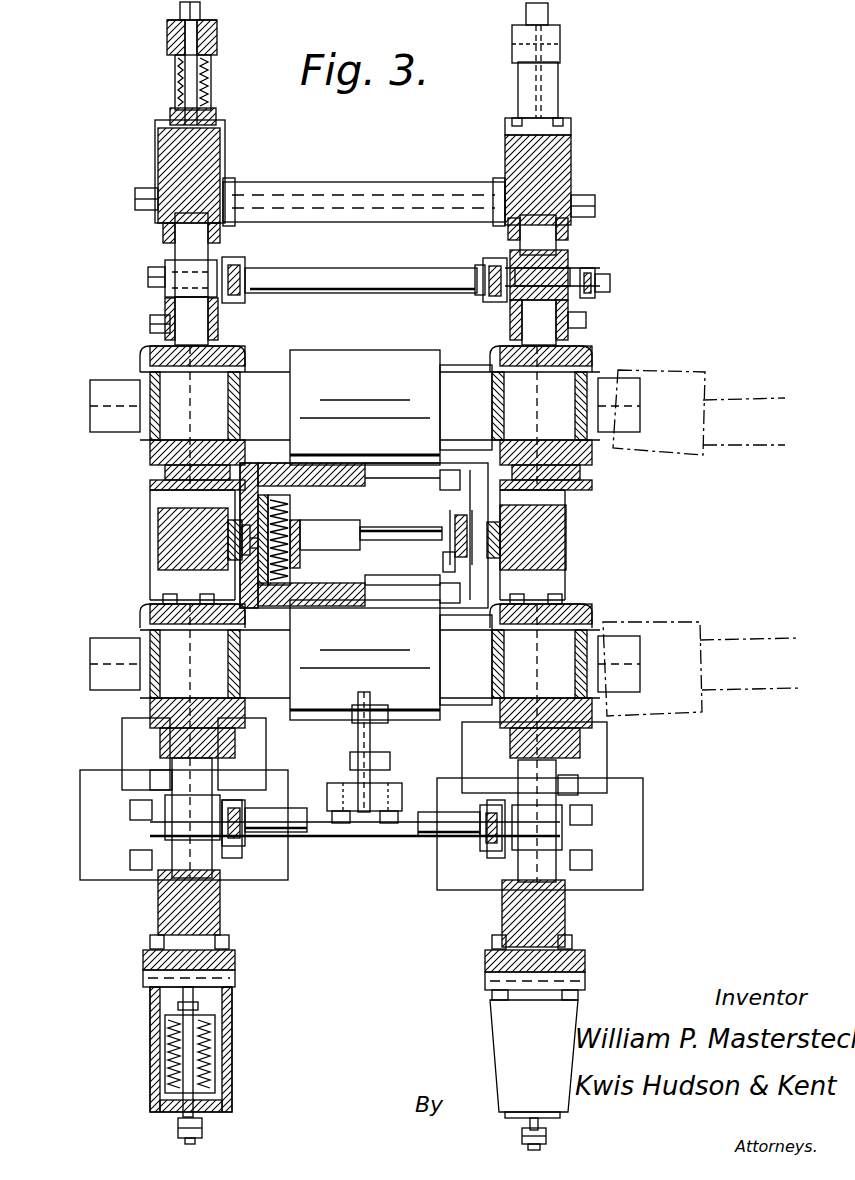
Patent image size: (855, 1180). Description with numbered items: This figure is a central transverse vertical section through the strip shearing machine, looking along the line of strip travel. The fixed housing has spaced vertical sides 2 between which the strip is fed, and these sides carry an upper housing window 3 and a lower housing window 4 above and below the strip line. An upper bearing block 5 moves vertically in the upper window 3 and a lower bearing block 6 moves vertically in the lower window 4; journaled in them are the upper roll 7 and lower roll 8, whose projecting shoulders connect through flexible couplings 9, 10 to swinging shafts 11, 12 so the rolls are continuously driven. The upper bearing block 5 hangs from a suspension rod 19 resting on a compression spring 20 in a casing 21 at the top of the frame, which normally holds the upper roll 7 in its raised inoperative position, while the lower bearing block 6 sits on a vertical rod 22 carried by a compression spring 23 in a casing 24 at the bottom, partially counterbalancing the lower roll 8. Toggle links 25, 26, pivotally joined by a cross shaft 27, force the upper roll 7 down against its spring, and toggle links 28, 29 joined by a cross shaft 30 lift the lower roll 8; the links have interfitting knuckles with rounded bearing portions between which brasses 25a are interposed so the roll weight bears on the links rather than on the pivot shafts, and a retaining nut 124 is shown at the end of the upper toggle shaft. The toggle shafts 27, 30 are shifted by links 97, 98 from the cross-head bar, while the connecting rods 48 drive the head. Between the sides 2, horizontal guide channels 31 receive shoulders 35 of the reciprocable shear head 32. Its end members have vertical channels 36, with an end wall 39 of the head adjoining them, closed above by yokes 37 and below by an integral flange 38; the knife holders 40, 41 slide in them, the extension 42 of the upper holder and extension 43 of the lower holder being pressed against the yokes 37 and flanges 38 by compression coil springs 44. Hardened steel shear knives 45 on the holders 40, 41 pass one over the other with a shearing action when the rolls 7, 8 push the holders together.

The vertical sides 2 is at (160, 155).
The upper housing window 3 is at (165, 322).
The lower housing window 4 is at (168, 585).
The upper bearing block 5 is at (225, 350).
The lower bearing block 6 is at (142, 708).
The upper roll 7 is at (420, 352).
The lower roll 8 is at (418, 718).
The flexible coupling 9 is at (680, 382).
The flexible coupling 10 is at (660, 628).
The swinging shaft 11 is at (768, 438).
The swinging shaft 12 is at (742, 642).
The suspension rod 19 is at (195, 103).
The compression spring 20 is at (205, 74).
The casing 21 is at (176, 86).
The vertical rod 22 is at (200, 1115).
The compression spring 23 is at (200, 1072).
The casing 24 is at (232, 1020).
The toggle link 25 is at (170, 254).
The brass 25a is at (582, 266).
The toggle link 26 is at (172, 302).
The cross shaft 27 is at (430, 278).
The toggle link 28 is at (200, 792).
The toggle link 29 is at (182, 872).
The cross shaft 30 is at (290, 812).
The horizontal guide channel 31 is at (172, 540).
The shear head 32 is at (395, 605).
The shoulder 35 is at (190, 570).
The vertical channel 36 is at (245, 535).
The yoke 37 is at (290, 486).
The integral flange 38 is at (296, 590).
The housing end wall 39 is at (240, 496).
The knife holder 40 is at (365, 475).
The knife holder 41 is at (345, 595).
The extension 42 is at (260, 510).
The extension 43 is at (268, 580).
The compression coil spring 44 is at (252, 560).
The shear knife 45 is at (355, 533).
The connecting rod 48 is at (460, 538).
The link 97 is at (240, 263).
The link 98 is at (243, 846).
The nut 124 is at (608, 278).